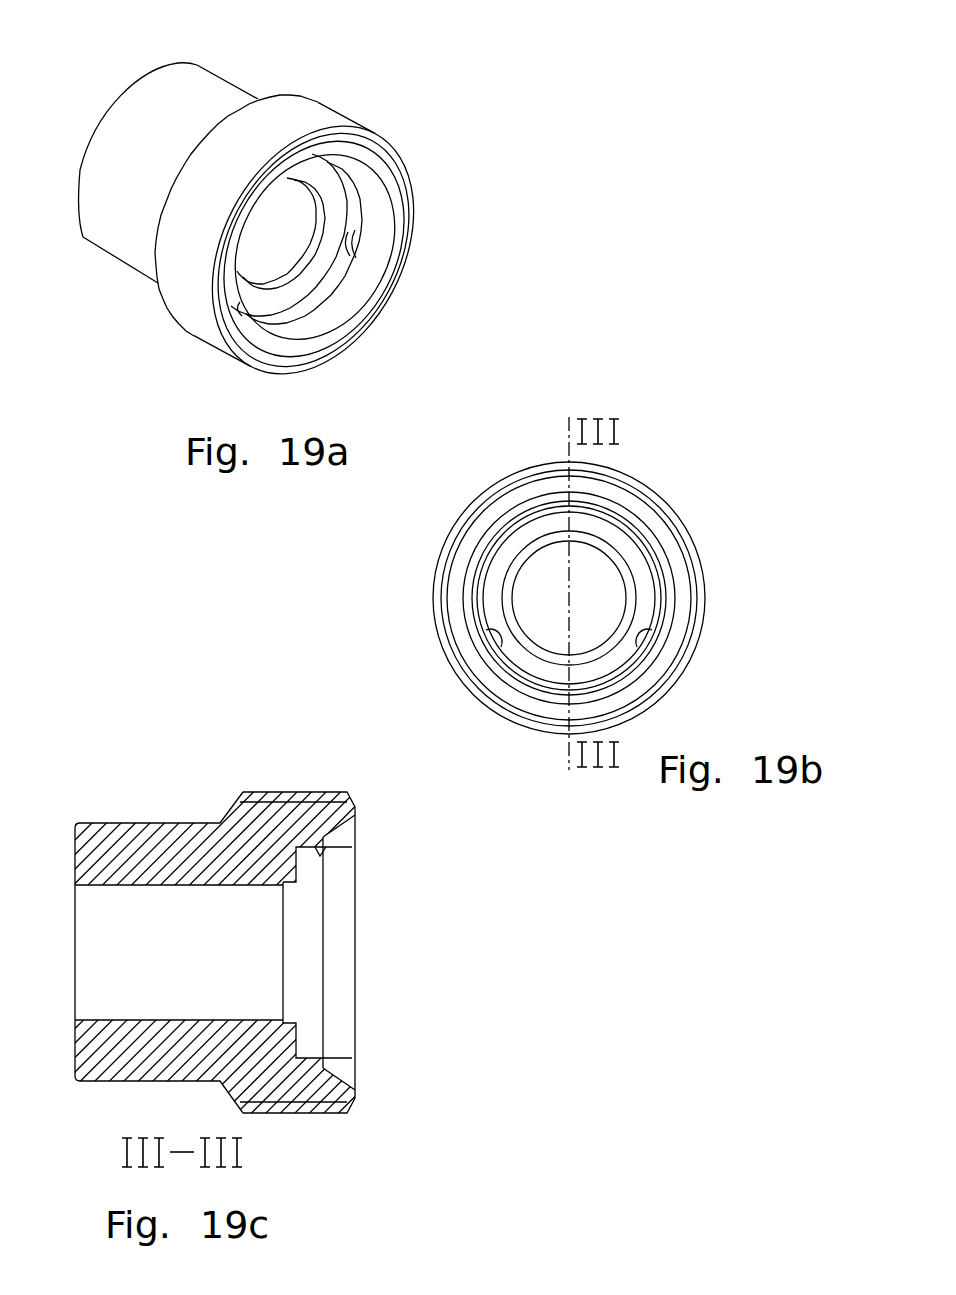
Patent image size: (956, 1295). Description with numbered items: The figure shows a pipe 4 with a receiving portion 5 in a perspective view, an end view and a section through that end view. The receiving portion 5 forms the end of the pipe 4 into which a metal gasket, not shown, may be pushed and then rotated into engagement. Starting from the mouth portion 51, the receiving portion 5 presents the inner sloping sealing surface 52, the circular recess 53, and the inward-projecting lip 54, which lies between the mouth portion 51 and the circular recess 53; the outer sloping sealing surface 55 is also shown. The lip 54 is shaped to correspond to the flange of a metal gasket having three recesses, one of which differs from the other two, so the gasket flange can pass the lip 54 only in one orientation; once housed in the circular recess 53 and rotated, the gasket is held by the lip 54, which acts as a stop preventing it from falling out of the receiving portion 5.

In FIG. 19A, the pipe 4 is at (323, 217).
In FIG. 19B, the pipe 4 is at (625, 584).
In FIG. 19C, the pipe 4 is at (343, 882).
In FIG. 19A, the receiving portion 5 is at (287, 117).
In FIG. 19C, the receiving portion 5 is at (300, 787).
In FIG. 19A, the mouth portion 51 is at (380, 320).
In FIG. 19A, the inner sloping sealing surface 52 is at (277, 293).
In FIG. 19C, the inner sloping sealing surface 52 is at (293, 1027).
In FIG. 19A, the circular recess 53 is at (353, 213).
In FIG. 19C, the circular recess 53 is at (303, 1053).
In FIG. 19A, the inward-projecting lip 54 is at (355, 248).
In FIG. 19B, the inward-projecting lip 54 is at (653, 635).
In FIG. 19C, the inward-projecting lip 54 is at (322, 849).
In FIG. 19A, the outer sloping sealing surface 55 is at (355, 270).
In FIG. 19C, the outer sloping sealing surface 55 is at (327, 1073).